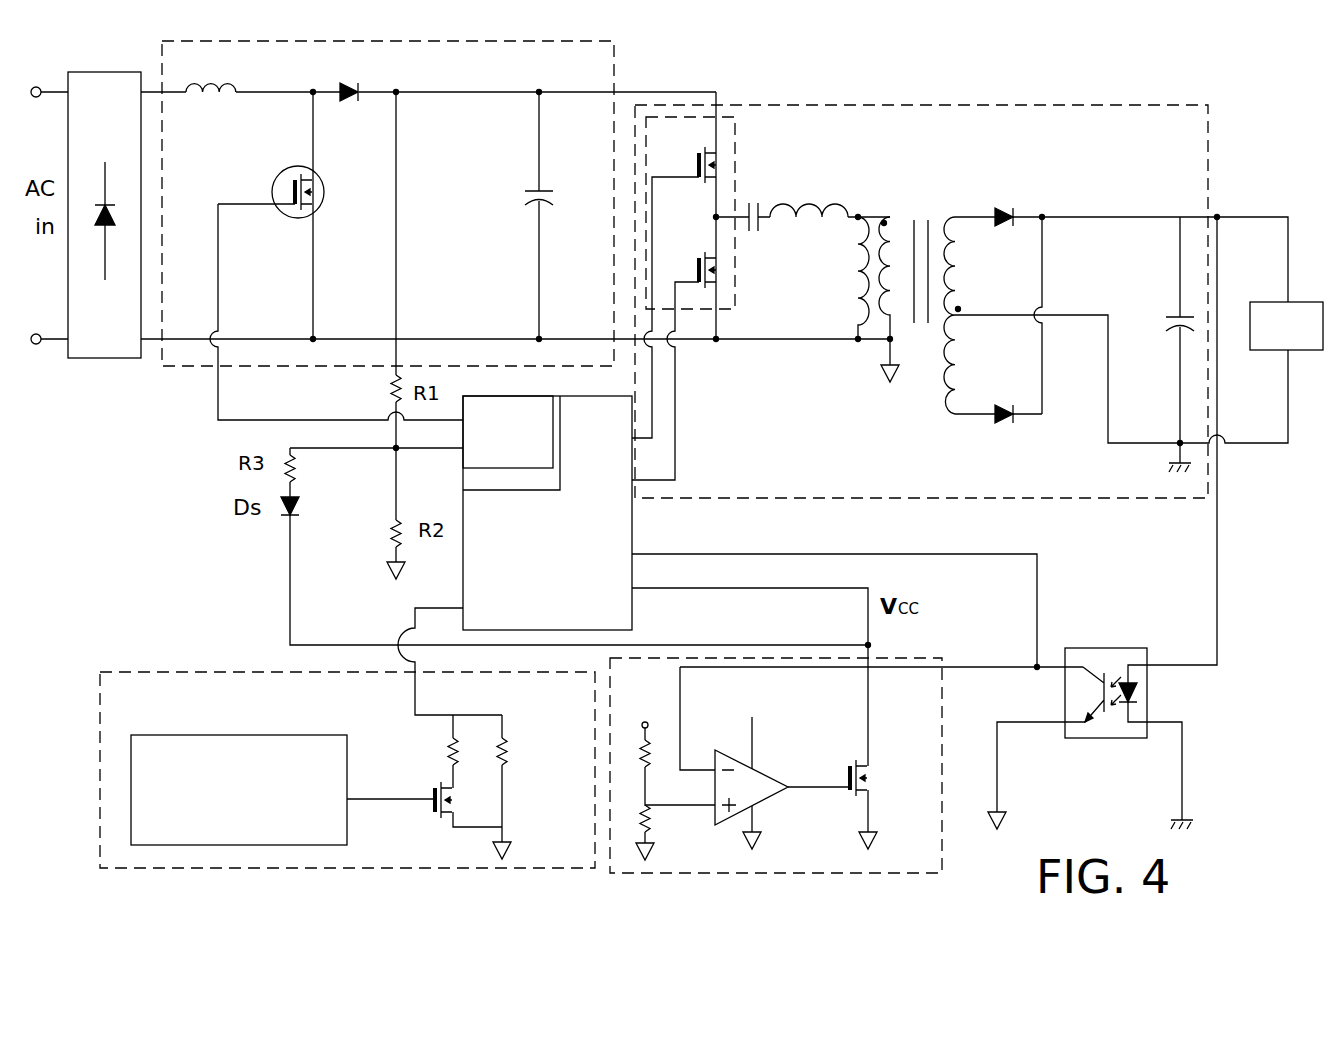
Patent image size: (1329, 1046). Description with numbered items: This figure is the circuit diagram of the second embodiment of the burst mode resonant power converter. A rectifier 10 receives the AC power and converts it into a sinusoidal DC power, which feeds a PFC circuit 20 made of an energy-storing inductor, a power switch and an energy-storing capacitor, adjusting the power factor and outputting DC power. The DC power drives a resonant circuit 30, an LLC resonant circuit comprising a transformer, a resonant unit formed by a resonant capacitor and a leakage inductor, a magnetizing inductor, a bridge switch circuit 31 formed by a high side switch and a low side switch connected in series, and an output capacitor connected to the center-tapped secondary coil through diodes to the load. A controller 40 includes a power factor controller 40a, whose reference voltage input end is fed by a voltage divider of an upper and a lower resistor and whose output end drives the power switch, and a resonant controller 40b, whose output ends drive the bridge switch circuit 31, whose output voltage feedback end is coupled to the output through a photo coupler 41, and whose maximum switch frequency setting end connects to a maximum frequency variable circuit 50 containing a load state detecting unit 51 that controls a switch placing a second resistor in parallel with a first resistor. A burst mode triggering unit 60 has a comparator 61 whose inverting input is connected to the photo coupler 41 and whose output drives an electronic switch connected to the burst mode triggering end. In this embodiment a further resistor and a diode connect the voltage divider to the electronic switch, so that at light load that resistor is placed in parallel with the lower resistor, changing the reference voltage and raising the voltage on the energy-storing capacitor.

The rectifier 10 is at (93, 72).
The PFC circuit 20 is at (598, 83).
The resonant circuit 30 is at (977, 276).
The bridge switch circuit 31 is at (706, 118).
The controller 40 is at (584, 456).
The power factor controller 40a is at (503, 397).
The resonant controller 40b is at (633, 523).
The photo coupler 41 is at (1100, 658).
The maximum frequency variable circuit 50 is at (347, 761).
The load state detecting unit 51 is at (253, 817).
The burst mode triggering unit 60 is at (807, 733).
The comparator 61 is at (765, 790).